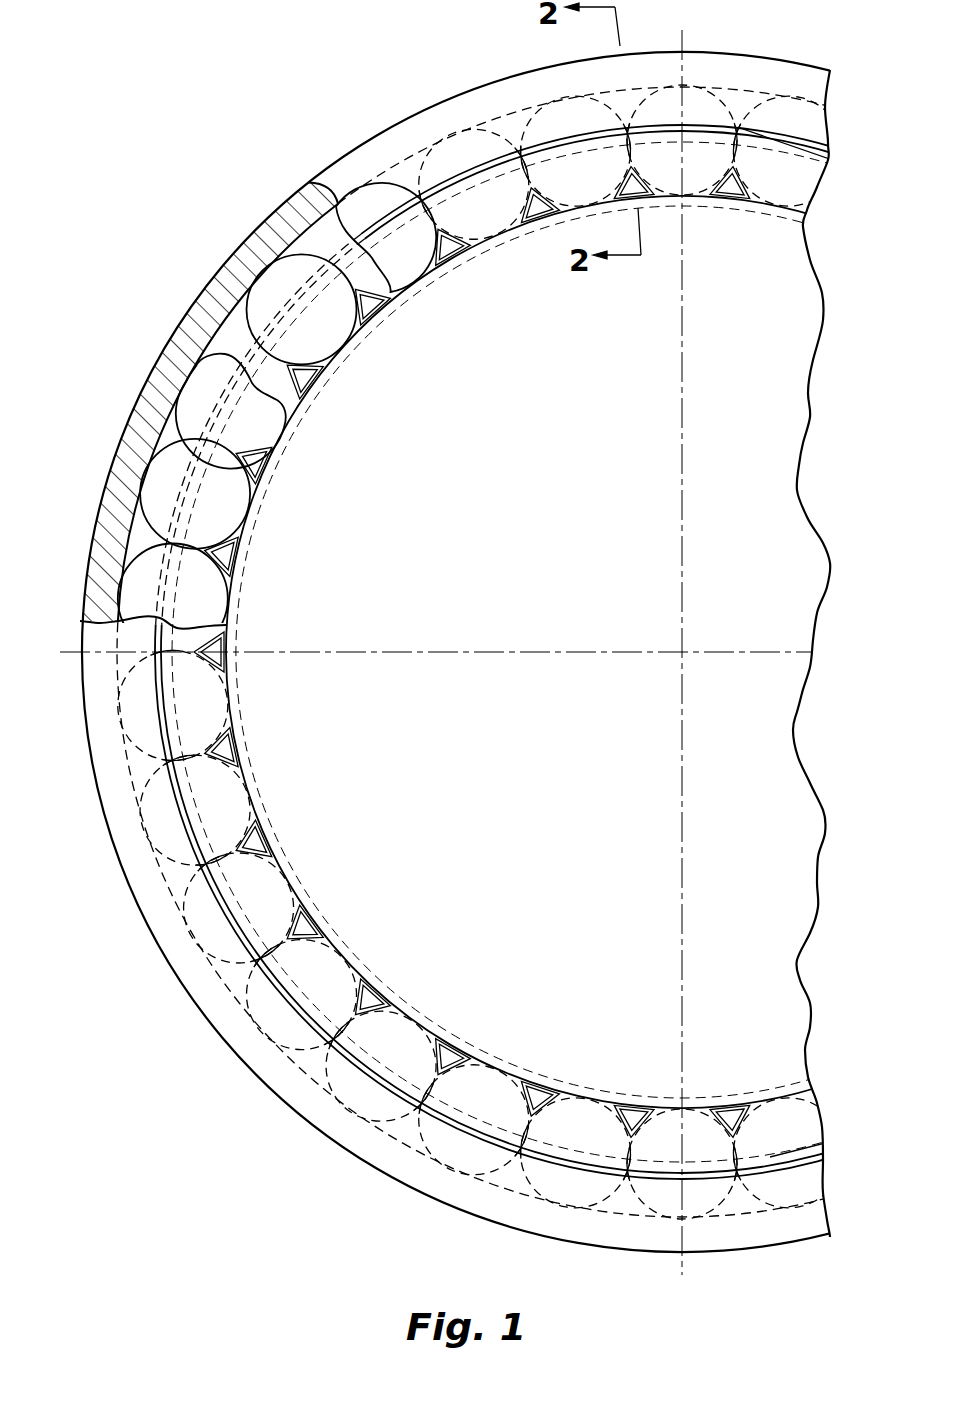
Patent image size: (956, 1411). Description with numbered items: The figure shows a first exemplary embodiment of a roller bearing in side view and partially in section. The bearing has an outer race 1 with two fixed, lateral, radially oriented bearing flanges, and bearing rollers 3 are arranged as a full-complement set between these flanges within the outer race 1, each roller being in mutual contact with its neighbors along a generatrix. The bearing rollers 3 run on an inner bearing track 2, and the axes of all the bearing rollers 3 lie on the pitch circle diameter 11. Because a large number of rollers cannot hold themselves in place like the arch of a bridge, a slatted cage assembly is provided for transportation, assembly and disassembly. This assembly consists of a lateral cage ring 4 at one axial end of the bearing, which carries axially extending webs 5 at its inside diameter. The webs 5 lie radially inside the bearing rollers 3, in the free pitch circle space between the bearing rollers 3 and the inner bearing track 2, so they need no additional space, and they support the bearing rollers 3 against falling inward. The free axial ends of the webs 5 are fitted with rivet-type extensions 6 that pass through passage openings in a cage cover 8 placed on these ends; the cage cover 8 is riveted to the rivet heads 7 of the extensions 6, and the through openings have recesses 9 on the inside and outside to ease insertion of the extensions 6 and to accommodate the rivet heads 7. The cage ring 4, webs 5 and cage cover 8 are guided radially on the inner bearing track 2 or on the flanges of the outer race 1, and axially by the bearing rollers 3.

The outer race 1 is at (415, 122).
The inner bearing track 2 is at (760, 488).
The bearing rollers 3 is at (270, 285).
The cage ring 4 is at (267, 373).
The webs 5 is at (253, 463).
The extensions 6 is at (243, 458).
The rivet heads 7 is at (217, 750).
The cage cover 8 is at (252, 893).
The recesses 9 is at (300, 945).
The pitch circle diameter 11 is at (387, 1073).